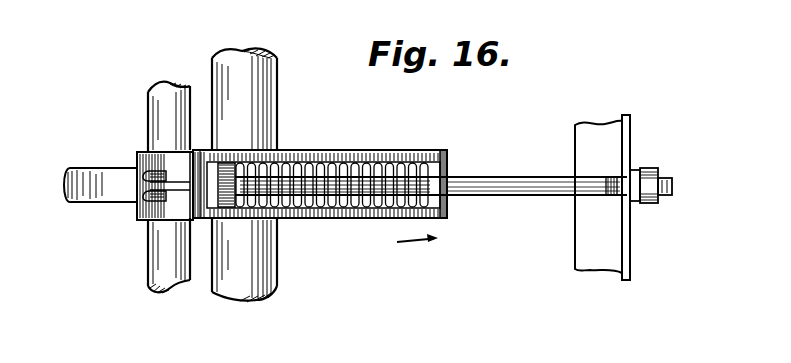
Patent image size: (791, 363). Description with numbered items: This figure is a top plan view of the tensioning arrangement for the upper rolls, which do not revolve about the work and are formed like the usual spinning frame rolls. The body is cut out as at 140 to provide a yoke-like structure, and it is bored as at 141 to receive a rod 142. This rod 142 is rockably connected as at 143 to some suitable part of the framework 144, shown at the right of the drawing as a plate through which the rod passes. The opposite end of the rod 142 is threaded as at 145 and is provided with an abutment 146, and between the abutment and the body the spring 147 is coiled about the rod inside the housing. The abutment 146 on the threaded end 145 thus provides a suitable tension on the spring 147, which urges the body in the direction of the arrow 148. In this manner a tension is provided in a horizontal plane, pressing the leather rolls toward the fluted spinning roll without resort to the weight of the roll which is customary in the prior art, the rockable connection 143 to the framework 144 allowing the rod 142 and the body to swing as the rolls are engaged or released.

The cut-out 140 is at (347, 162).
The bore 141 is at (447, 197).
The rod 142 is at (508, 165).
The rockable connection 143 is at (610, 182).
The framework 144 is at (610, 245).
The threaded end 145 is at (250, 166).
The abutment 146 is at (238, 148).
The spring 147 is at (330, 204).
The arrow 148 is at (416, 253).